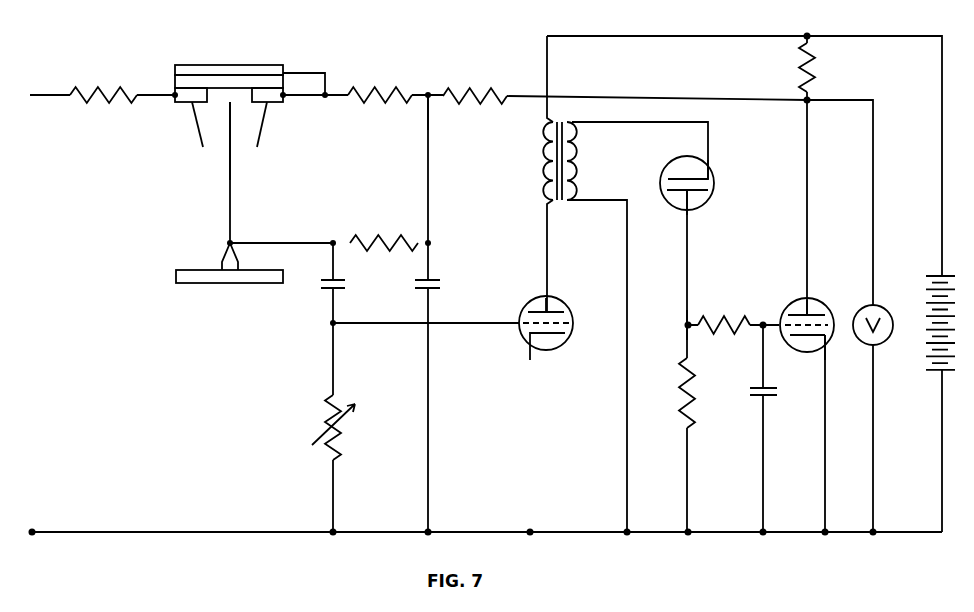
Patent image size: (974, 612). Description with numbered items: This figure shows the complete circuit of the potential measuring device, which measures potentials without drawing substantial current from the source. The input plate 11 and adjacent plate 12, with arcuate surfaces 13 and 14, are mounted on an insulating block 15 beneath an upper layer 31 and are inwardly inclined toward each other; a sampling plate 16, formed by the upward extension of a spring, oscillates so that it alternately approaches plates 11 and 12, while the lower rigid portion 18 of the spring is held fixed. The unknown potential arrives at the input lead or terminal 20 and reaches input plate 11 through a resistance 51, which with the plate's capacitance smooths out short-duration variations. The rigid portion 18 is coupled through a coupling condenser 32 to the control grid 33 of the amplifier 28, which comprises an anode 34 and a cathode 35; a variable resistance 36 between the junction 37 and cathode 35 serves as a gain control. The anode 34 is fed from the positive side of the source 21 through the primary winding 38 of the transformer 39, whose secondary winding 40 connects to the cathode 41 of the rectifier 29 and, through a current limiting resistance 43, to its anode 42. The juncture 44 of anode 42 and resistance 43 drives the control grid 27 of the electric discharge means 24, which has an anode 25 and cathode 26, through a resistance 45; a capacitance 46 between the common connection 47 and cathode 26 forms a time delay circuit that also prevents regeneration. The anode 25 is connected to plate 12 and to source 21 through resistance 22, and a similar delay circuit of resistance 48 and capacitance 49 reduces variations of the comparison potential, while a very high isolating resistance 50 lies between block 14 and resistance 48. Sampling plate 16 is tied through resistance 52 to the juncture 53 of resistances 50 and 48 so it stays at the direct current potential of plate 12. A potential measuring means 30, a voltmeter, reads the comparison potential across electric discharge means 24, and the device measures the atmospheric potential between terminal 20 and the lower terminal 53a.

The input plate 11 is at (192, 127).
The adjacent plate 12 is at (271, 127).
The arcuate surface 13 is at (186, 102).
The arcuate surface 14 is at (265, 102).
The insulating block 15 is at (175, 80).
The sampling plate 16 is at (230, 123).
The lower rigid portion 18 is at (224, 252).
The input lead or terminal 20 is at (46, 88).
The source of direct current potential 21 is at (948, 350).
The resistance 22 is at (821, 67).
The electric discharge means 24 is at (793, 310).
The anode 25 is at (818, 308).
The cathode 26 is at (795, 338).
The control grid 27 is at (825, 338).
The amplifier 28 is at (523, 310).
The rectifier 29 is at (708, 172).
The potential measuring means 30 is at (887, 338).
The metal layer 31 is at (202, 65).
The coupling condenser 32 is at (336, 283).
The control grid 33 is at (567, 325).
The anode 34 is at (557, 312).
The cathode 35 is at (565, 335).
The variable resistance 36 is at (338, 427).
The junction 37 is at (332, 322).
The primary winding 38 is at (552, 125).
The transformer 39 is at (568, 122).
The secondary winding 40 is at (572, 150).
The cathode 41 is at (667, 173).
The anode 42 is at (700, 190).
The current limiting resistance 43 is at (694, 375).
The juncture 44 is at (687, 325).
The resistance 45 is at (722, 318).
The capacitance 46 is at (767, 394).
The common connection 47 is at (763, 323).
The resistance 48 is at (470, 89).
The capacitance 49 is at (432, 283).
The isolating resistance 50 is at (380, 81).
The resistance 51 is at (103, 106).
The resistance 52 is at (380, 237).
The juncture 53 is at (428, 95).
The terminal 53a is at (38, 527).